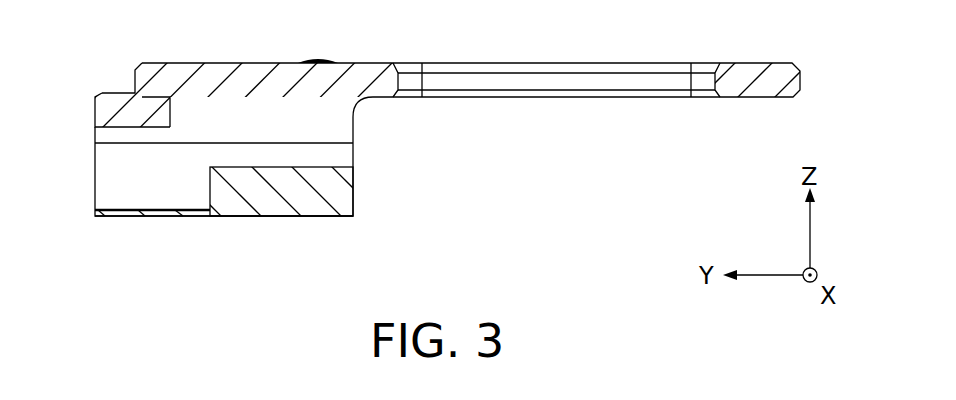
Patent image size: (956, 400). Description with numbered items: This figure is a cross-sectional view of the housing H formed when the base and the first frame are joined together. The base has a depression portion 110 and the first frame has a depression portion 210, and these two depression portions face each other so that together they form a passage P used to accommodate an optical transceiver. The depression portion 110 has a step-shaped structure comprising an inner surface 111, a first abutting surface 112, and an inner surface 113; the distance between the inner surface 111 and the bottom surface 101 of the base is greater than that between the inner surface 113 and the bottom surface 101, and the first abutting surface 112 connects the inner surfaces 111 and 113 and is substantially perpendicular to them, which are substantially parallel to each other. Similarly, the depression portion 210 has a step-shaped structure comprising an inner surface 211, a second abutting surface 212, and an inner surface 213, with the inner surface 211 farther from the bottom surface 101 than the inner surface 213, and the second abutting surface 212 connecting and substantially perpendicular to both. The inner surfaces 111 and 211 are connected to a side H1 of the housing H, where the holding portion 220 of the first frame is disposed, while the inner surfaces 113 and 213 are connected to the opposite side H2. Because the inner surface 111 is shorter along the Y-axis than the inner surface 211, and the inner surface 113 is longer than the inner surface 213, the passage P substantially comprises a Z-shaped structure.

The housing H is at (90, 82).
The side of the housing H1 is at (353, 185).
The opposite side of the housing H2 is at (95, 164).
The passage P is at (442, 112).
The bottom surface 101 is at (238, 216).
The depression portion 110 is at (333, 155).
The inner surface 111 is at (305, 170).
The first abutting surface 112 is at (210, 196).
The inner surface 113 is at (123, 210).
The depression portion 210 is at (333, 121).
The inner surface 211 is at (306, 98).
The second abutting surface 212 is at (167, 105).
The inner surface 213 is at (122, 130).
The holding portion 220 is at (758, 63).